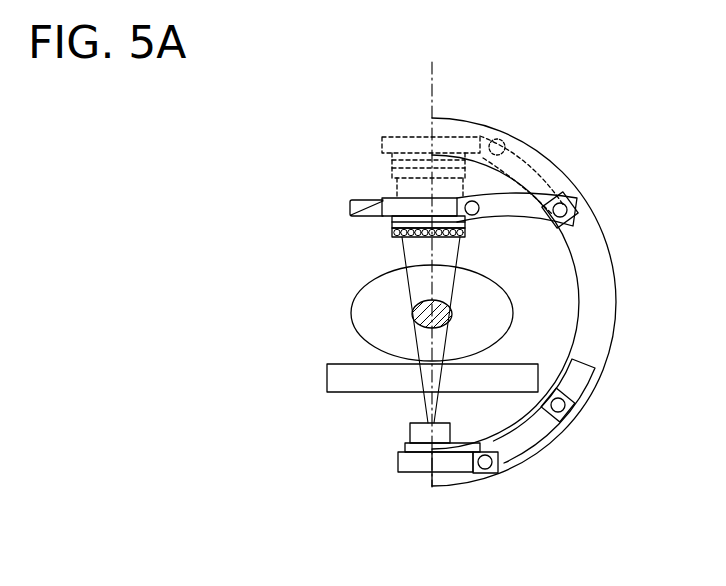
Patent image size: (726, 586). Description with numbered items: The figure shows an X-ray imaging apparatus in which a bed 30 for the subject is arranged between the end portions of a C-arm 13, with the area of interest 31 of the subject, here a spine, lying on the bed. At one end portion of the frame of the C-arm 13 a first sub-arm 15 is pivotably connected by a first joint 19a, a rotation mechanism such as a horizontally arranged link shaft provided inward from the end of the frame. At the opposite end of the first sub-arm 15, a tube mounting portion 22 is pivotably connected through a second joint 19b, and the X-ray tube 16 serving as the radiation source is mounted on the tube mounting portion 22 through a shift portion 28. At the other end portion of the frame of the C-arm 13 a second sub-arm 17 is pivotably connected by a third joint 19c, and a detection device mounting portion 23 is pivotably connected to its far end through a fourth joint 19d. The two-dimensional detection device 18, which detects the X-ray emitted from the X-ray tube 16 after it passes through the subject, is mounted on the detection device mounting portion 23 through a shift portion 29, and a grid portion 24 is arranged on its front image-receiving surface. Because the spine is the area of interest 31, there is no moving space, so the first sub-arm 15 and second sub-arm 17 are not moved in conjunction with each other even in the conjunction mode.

The C-arm 13 is at (602, 307).
The first sub-arm 15 is at (528, 439).
The X-ray tube 16 is at (410, 431).
The second sub-arm 17 is at (498, 203).
The two-dimensional detection device 18 is at (392, 224).
The first joint 19a is at (572, 413).
The second joint 19b is at (487, 473).
The third joint 19c is at (574, 200).
The fourth joint 19d is at (477, 191).
The tube mounting portion 22 is at (419, 470).
The detection device mounting portion 23 is at (400, 204).
The grid portion 24 is at (392, 235).
The shift portion 28 is at (403, 450).
The shift portion 29 is at (362, 207).
The bed 30 is at (327, 374).
The area of interest 31 is at (412, 314).